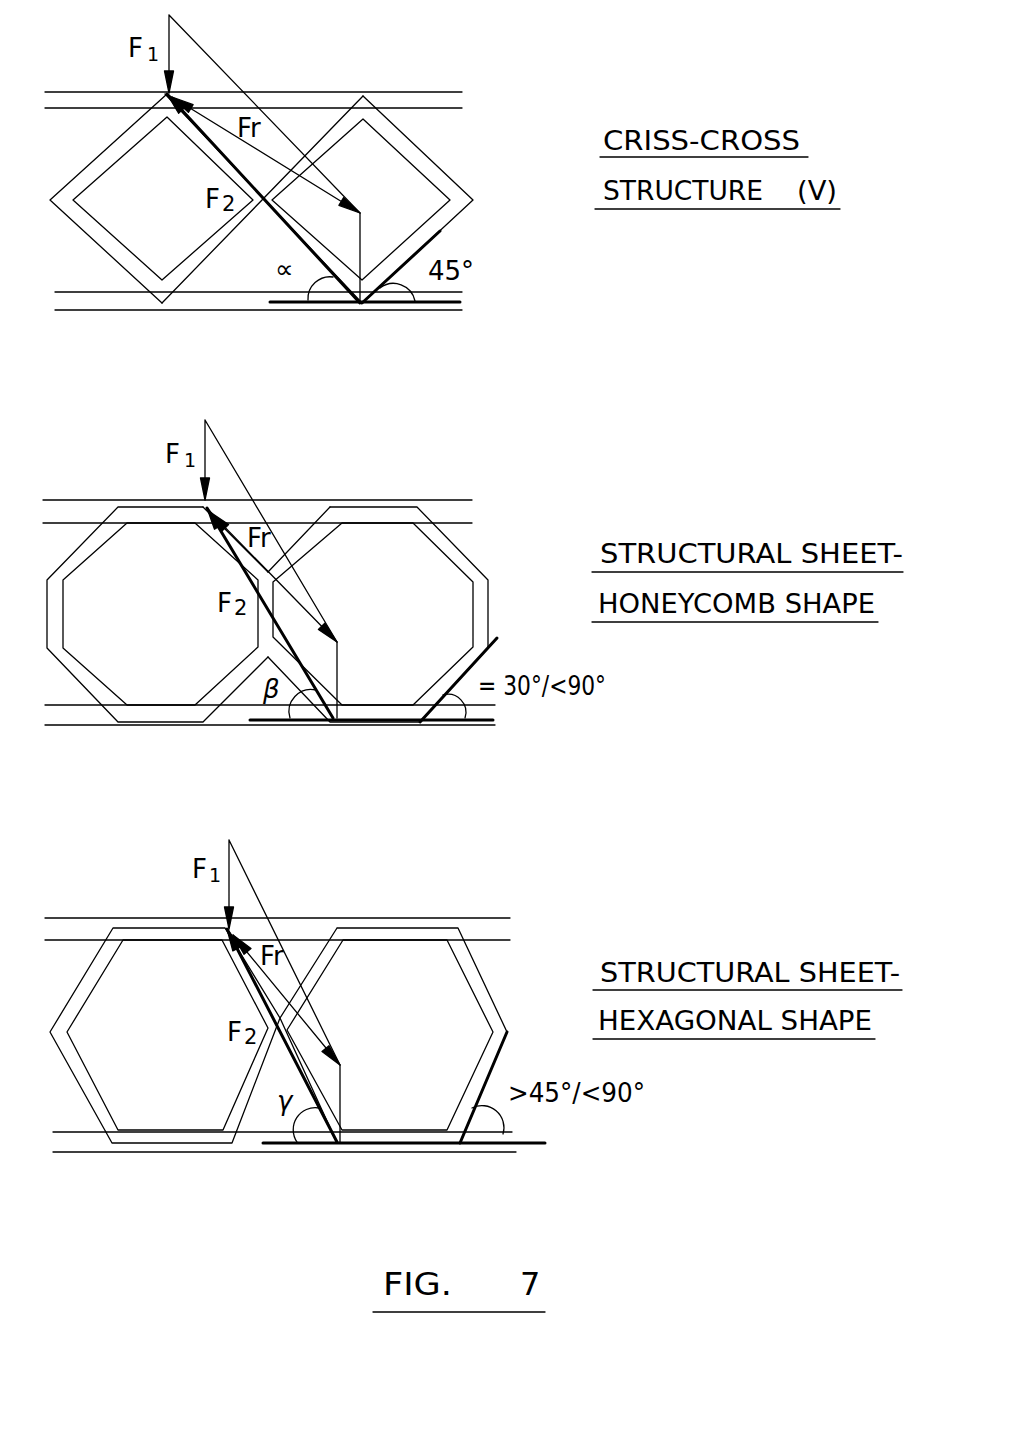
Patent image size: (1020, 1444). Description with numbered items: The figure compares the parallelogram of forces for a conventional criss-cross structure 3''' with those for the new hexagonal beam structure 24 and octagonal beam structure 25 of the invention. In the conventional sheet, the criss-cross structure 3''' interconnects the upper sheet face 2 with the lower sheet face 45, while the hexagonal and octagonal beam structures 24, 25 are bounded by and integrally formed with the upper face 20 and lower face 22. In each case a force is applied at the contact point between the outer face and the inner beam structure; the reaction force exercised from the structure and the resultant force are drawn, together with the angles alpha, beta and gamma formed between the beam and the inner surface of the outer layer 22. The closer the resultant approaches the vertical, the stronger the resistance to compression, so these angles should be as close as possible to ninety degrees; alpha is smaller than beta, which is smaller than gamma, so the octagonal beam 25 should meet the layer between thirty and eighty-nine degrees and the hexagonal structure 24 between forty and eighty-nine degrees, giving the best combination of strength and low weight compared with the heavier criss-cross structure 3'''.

The upper sheet face 2 is at (413, 103).
The criss-cross structure 3''' is at (372, 199).
The base layer 45 is at (438, 300).
The upper face 20 is at (443, 510).
The octagonal beam structure 25 is at (305, 543).
The lower face 22 is at (450, 712).
The hexagonal beam structure 24 is at (322, 972).